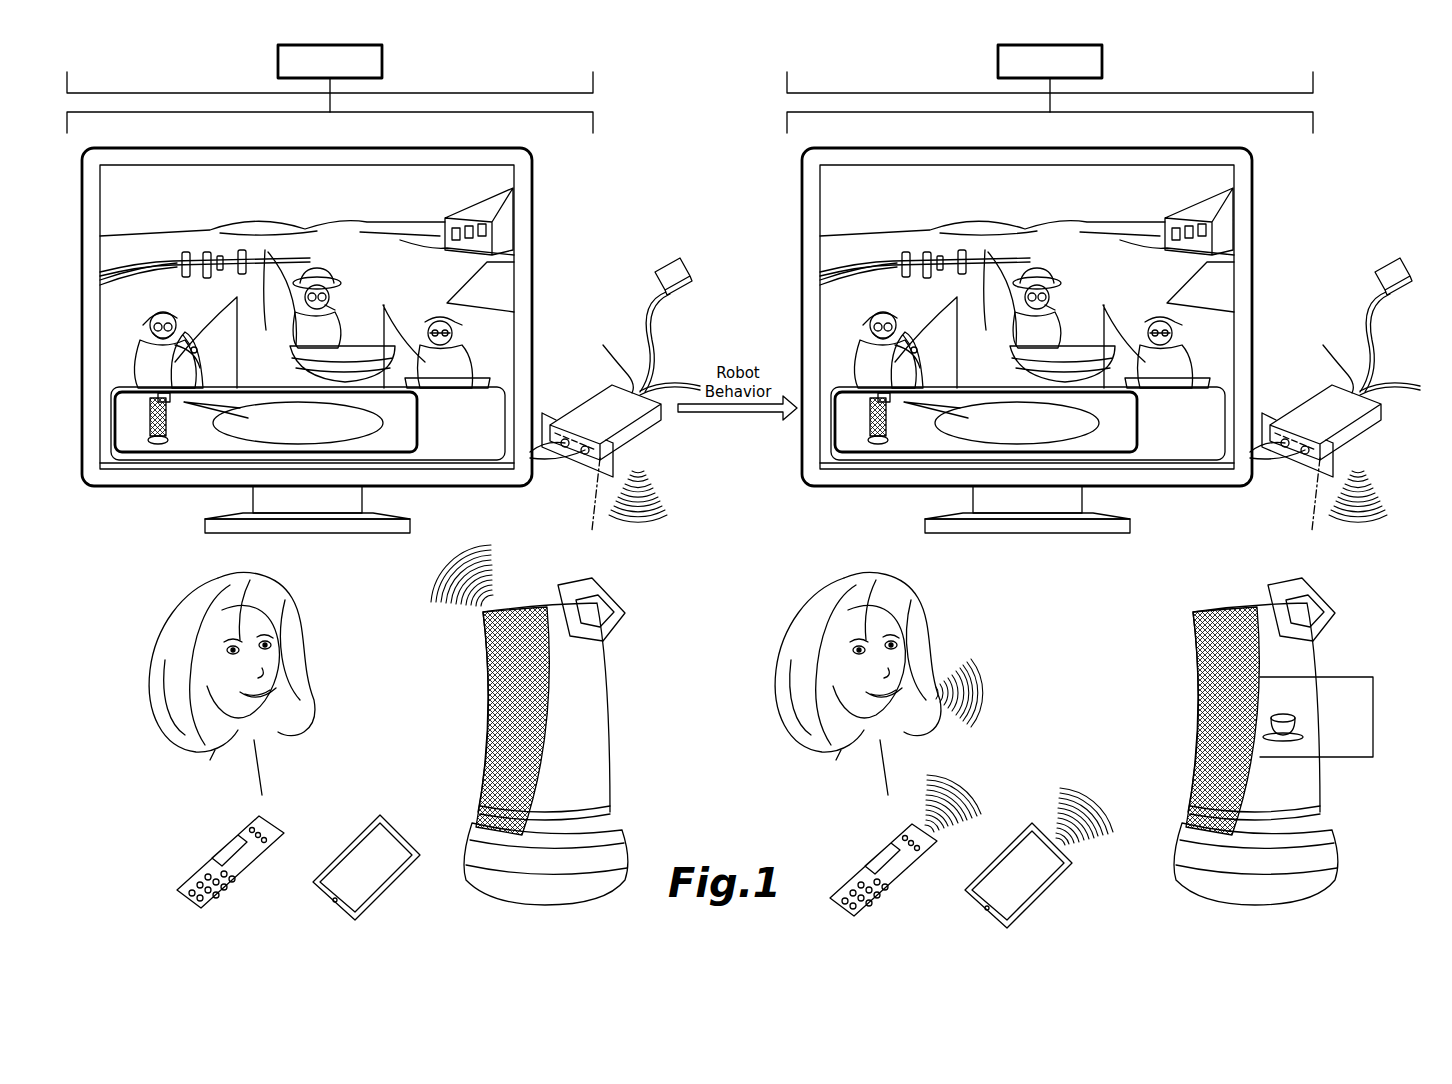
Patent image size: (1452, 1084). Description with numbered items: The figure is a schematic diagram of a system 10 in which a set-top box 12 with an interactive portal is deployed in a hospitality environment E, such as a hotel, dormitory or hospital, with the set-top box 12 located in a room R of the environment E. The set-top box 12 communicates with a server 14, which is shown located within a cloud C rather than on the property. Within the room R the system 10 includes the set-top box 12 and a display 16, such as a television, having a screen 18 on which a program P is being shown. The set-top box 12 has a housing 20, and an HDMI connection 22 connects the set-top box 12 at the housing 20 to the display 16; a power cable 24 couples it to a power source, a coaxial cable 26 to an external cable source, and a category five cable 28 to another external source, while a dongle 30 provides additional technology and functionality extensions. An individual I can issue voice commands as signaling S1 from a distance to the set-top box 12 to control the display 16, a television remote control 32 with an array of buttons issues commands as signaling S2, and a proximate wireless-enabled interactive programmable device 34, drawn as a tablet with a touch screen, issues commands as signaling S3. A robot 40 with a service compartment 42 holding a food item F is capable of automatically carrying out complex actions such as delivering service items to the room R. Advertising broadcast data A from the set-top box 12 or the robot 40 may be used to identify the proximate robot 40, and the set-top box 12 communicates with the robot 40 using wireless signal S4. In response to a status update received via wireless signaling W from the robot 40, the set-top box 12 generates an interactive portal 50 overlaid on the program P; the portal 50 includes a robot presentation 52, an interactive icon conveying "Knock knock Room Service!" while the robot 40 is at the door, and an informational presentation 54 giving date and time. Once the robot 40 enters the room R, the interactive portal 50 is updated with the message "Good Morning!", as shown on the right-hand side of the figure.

The system 10 is at (636, 200).
The set-top box 12 is at (645, 433).
The server 14 is at (383, 62).
The display 16 is at (535, 234).
The screen 18 is at (362, 198).
The housing 20 is at (595, 405).
The HDMI connection 22 is at (567, 462).
The power cable 24 is at (550, 455).
The coaxial cable 26 is at (614, 342).
The category five (Cat 5) cable 28 is at (672, 388).
The dongle 30 is at (680, 262).
The television remote control 32 is at (212, 846).
The proximate wireless-enabled interactive programmable device 34 is at (398, 888).
The robot 40 is at (480, 685).
The service compartment 42 is at (592, 717).
The interactive portal 50 is at (113, 460).
The robot presentation 52 is at (135, 400).
The informational presentation 54 is at (467, 452).
The cloud C is at (690, 80).
The room R is at (690, 125).
The environment E is at (592, 100).
The program P is at (291, 198).
The individual I is at (222, 578).
The wireless signaling W is at (440, 562).
The advertising broadcast data A is at (660, 515).
The food item F is at (1310, 730).
The signaling S1 is at (985, 693).
The signaling S2 is at (927, 815).
The signaling S3 is at (1100, 830).
The wireless signal S4 is at (1380, 518).